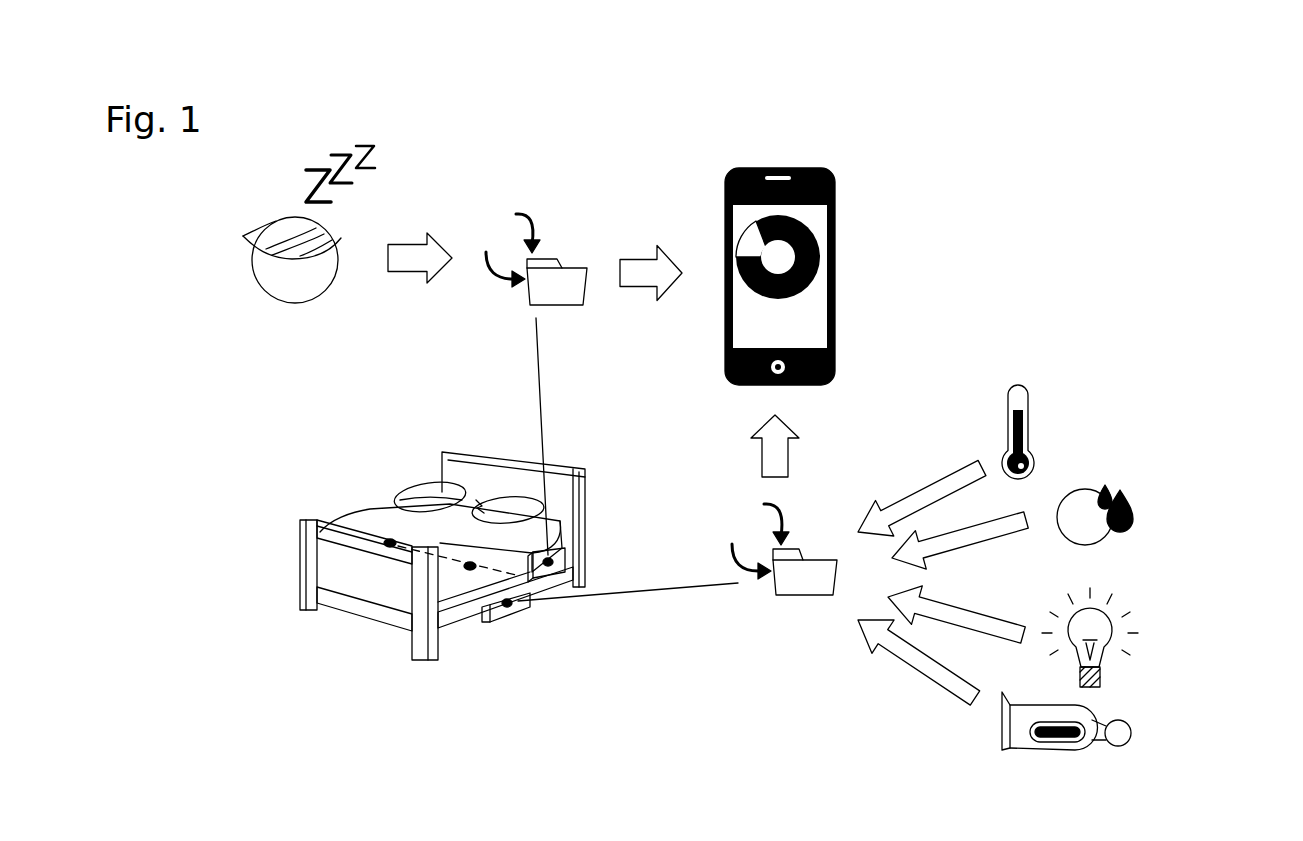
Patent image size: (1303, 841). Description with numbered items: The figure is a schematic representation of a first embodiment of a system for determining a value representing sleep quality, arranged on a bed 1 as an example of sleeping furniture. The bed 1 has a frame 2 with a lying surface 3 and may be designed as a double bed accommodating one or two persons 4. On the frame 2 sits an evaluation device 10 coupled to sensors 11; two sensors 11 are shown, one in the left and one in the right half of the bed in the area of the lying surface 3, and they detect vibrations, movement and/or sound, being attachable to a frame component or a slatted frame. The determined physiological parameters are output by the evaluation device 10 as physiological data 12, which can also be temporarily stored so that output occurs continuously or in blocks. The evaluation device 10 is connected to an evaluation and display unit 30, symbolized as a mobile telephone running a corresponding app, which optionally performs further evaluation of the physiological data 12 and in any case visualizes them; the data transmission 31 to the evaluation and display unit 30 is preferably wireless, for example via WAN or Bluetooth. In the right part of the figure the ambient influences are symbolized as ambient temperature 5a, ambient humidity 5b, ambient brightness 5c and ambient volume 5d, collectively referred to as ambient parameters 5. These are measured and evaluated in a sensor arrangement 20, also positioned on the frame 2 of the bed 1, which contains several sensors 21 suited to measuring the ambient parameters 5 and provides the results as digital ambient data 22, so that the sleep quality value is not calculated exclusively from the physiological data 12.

The bed 1 is at (438, 557).
The frame 2 is at (415, 556).
The lying surface 3 is at (340, 532).
The person 4 is at (290, 303).
The ambient parameters 5 is at (1047, 537).
The ambient temperature 5a is at (1030, 418).
The ambient humidity 5b is at (1115, 488).
The ambient brightness 5c is at (1110, 617).
The ambient volume 5d is at (1132, 727).
The evaluation device 10 is at (570, 553).
The sensors 11 is at (466, 562).
The physiological data 12 is at (562, 262).
The sensor arrangement 20 is at (514, 649).
The sensors 21 is at (493, 619).
The ambient data 22 is at (803, 598).
The evaluation and display unit 30 is at (801, 168).
The data transmission 31 is at (645, 290).